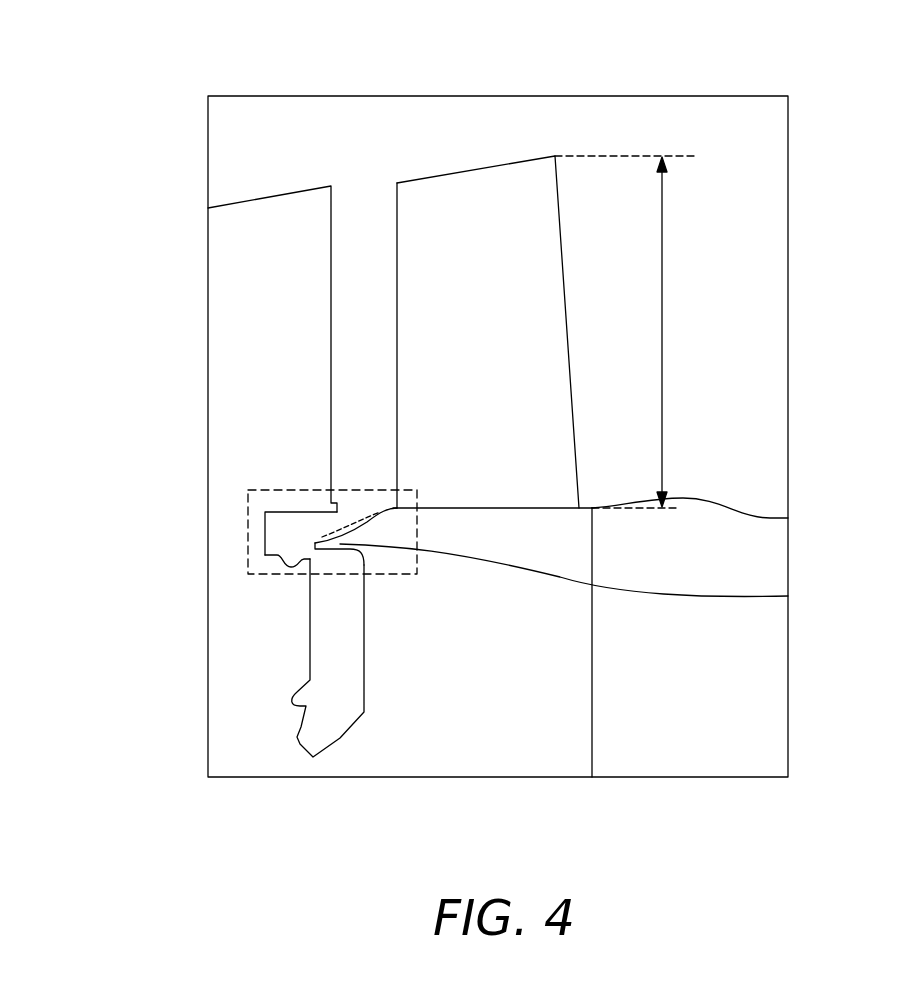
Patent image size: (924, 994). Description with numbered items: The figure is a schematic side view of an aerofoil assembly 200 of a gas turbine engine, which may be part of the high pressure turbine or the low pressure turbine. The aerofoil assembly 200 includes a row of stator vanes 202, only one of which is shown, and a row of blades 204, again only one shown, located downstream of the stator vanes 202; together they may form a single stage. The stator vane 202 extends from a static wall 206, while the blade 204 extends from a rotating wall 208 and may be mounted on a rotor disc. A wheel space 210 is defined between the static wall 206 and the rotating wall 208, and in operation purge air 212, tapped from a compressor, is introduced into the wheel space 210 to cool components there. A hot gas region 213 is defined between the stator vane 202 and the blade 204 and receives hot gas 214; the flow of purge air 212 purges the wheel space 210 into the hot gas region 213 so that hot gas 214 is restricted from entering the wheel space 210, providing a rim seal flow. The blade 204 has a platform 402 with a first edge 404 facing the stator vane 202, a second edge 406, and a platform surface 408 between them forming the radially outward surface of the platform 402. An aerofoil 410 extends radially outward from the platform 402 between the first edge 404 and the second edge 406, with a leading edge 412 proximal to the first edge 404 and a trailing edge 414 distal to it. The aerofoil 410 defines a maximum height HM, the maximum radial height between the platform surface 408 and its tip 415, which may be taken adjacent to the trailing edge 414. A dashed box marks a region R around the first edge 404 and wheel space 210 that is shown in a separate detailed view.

The aerofoil assembly 200 is at (142, 88).
The stator vane 202 is at (302, 223).
The blade 204 is at (590, 127).
The static wall 206 is at (272, 644).
The rotating wall 208 is at (487, 694).
The wheel space 210 is at (355, 616).
The purge air 212 is at (292, 525).
The hot gas region 213 is at (385, 285).
The hot gas 214 is at (366, 329).
The platform 402 is at (788, 596).
The first edge 404 is at (265, 549).
The second edge 406 is at (788, 518).
The platform surface 408 is at (583, 508).
The aerofoil 410 is at (540, 252).
The leading edge 412 is at (397, 447).
The trailing edge 414 is at (568, 330).
The tip 415 is at (477, 170).
The maximum height HM is at (626, 332).
The region R is at (263, 577).